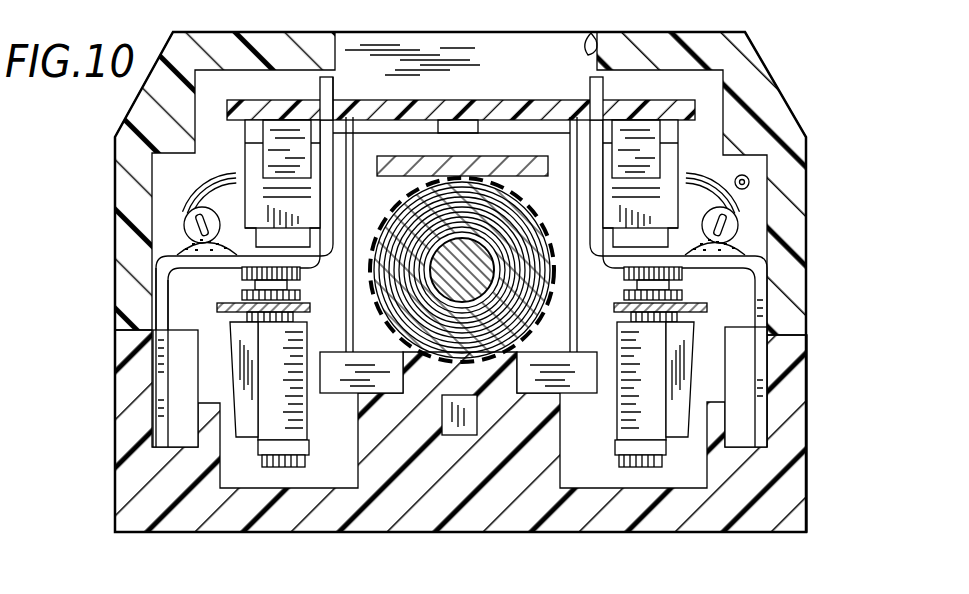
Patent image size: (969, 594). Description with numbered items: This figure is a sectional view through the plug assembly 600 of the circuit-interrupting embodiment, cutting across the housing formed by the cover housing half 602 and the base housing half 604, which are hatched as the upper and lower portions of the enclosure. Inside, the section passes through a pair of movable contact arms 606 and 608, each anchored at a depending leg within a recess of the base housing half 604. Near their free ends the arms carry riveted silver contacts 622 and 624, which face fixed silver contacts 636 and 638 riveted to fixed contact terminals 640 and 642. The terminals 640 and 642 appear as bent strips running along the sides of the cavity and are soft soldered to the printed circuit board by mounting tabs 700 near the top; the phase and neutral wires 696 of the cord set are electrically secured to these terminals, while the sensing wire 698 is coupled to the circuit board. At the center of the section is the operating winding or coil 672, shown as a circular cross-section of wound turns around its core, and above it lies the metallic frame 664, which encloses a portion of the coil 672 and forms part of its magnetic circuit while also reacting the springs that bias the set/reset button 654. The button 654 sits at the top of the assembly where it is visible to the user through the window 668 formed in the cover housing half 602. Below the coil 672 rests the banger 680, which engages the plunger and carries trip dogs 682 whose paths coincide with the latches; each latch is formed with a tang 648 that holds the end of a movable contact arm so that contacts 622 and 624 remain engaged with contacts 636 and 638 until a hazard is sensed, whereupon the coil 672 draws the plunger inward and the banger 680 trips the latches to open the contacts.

The plug assembly 600 is at (786, 70).
The cover housing half 602 is at (150, 112).
The base housing half 604 is at (768, 513).
The movable contact arm 606 is at (215, 312).
The movable contact arm 608 is at (768, 350).
The silver contact 622 is at (242, 296).
The silver contact 624 is at (682, 300).
The fixed silver contact 636 is at (242, 275).
The fixed silver contact 638 is at (682, 279).
The fixed contact terminal 640 is at (165, 262).
The fixed contact terminal 642 is at (742, 257).
The tang 648 is at (262, 396).
The set/reset button 654 is at (533, 44).
The metallic frame 664 is at (508, 110).
The window 668 is at (590, 33).
The coil 672 is at (410, 232).
The banger 680 is at (403, 352).
The trip dog 682 is at (365, 405).
The phase/neutral wire 696 is at (204, 204).
The sensing wire 698 is at (746, 176).
The mounting tab 700 is at (334, 84).